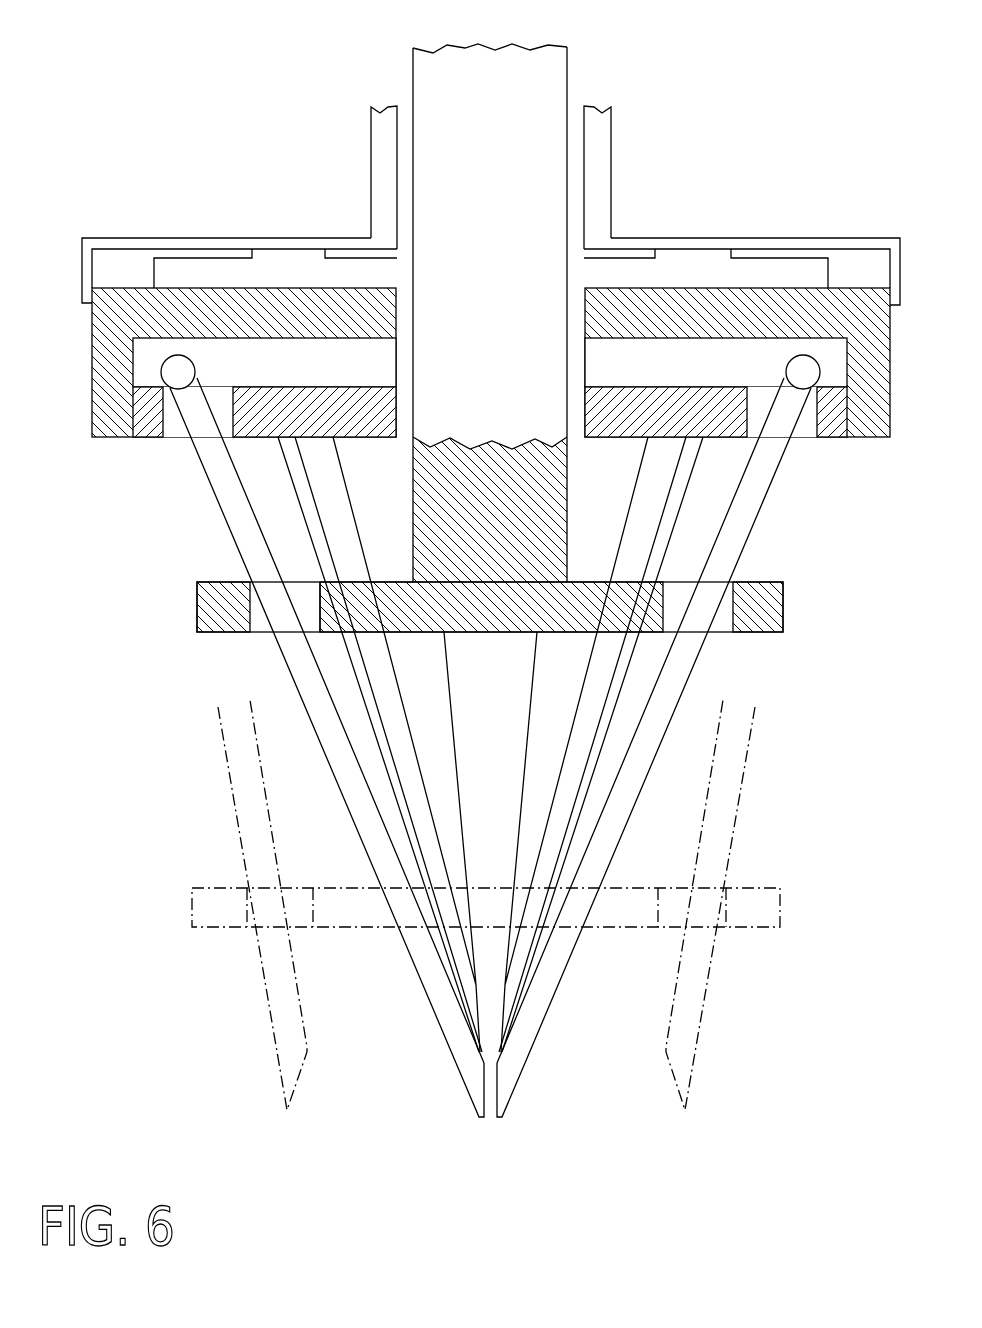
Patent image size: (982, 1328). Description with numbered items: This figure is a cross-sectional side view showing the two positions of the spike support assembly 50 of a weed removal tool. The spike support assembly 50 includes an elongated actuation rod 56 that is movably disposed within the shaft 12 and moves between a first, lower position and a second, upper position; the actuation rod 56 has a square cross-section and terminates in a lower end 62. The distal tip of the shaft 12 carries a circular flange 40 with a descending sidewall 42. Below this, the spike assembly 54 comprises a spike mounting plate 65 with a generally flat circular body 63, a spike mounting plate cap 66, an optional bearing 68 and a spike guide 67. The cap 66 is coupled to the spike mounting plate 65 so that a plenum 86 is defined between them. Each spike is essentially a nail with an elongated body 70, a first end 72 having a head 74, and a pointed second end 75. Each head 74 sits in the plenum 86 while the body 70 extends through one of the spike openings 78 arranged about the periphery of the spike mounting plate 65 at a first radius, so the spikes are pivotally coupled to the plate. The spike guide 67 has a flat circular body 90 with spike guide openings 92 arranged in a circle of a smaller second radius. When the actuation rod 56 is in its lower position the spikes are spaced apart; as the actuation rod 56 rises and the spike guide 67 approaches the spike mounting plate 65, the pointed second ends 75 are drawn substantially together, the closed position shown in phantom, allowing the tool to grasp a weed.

The spike support assembly 50 is at (172, 83).
The actuation rod 56 is at (540, 88).
The shaft 12 is at (612, 202).
The descending sidewall 42 is at (80, 288).
The circular flange 40 is at (118, 246).
The bearing 68 is at (293, 270).
The plenum 86 is at (263, 364).
The spike mounting plate cap 66 is at (92, 408).
The flat circular body 63 is at (672, 387).
The spike mounting plate 65 is at (143, 437).
The head 74 is at (786, 372).
The first end 72 is at (787, 422).
The elongated body 70 is at (747, 515).
The spike openings 78 is at (182, 424).
The lower end 62 is at (573, 543).
The spike guide openings 92 is at (312, 592).
The spike guide 67 is at (783, 632).
The flat circular body 90 is at (205, 633).
The pointed second end 75 is at (517, 1085).
The spike assembly 54 is at (174, 783).